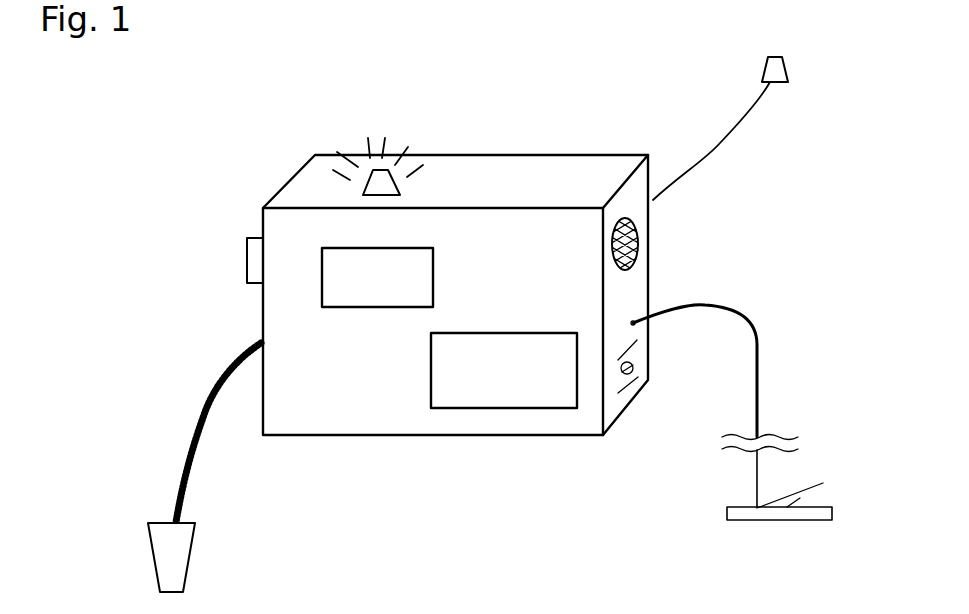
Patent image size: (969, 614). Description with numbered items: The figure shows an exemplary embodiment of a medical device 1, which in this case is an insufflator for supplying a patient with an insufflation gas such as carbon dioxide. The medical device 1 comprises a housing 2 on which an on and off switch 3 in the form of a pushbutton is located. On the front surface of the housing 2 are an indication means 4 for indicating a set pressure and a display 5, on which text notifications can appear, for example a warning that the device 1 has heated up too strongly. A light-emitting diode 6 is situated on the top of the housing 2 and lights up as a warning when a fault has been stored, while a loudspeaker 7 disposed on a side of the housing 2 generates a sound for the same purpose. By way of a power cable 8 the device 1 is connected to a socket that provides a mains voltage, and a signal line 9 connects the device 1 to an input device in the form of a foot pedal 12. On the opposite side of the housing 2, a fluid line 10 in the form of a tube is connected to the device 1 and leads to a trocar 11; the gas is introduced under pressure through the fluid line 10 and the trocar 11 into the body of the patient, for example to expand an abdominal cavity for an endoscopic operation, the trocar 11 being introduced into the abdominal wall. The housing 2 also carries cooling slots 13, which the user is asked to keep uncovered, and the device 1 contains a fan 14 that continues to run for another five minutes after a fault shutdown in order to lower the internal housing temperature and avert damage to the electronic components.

The medical device 1 is at (468, 123).
The housing 2 is at (533, 180).
The on and off switch 3 is at (253, 258).
The indication means 4 is at (332, 291).
The display 5 is at (502, 397).
The light-emitting diode 6 is at (372, 173).
The loudspeaker 7 is at (640, 240).
The power cable 8 is at (733, 137).
The signal line 9 is at (760, 352).
The fluid line 10 is at (195, 438).
The trocar 11 is at (165, 553).
The foot pedal 12 is at (727, 515).
The cooling slots 13 is at (633, 348).
The fan 14 is at (628, 365).